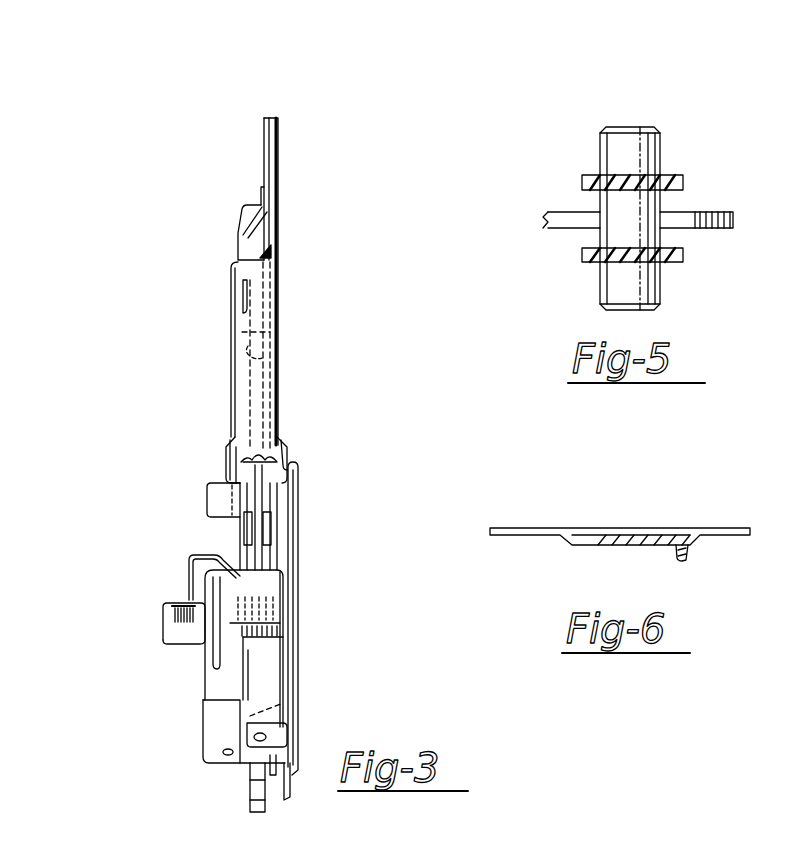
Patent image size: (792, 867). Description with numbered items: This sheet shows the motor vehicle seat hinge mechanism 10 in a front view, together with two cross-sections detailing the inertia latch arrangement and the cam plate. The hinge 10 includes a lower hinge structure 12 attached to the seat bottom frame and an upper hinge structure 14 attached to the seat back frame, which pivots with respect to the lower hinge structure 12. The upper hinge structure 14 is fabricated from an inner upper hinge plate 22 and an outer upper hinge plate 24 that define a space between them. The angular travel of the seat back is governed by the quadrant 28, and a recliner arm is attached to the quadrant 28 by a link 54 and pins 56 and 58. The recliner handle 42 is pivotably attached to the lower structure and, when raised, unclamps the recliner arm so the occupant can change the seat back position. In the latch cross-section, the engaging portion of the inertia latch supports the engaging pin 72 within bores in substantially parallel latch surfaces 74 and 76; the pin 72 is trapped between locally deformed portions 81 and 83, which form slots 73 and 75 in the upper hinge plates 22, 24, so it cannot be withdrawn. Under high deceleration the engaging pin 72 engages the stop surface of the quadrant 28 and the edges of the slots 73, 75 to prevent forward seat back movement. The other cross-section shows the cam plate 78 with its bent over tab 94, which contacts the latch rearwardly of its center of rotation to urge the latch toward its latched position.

In FIG. 3, the seat hinge mechanism 10 is at (298, 438).
In FIG. 3, the lower hinge structure 12 is at (298, 714).
In FIG. 3, the upper hinge structure 14 is at (278, 232).
In FIG. 3, the inner upper hinge plate 22 is at (278, 158).
In FIG. 3, the outer upper hinge plate 24 is at (262, 190).
In FIG. 5, the quadrant 28 is at (710, 212).
In FIG. 3, the recliner handle 42 is at (173, 603).
In FIG. 3, the link 54 is at (256, 500).
In FIG. 3, the pin 56 is at (287, 458).
In FIG. 3, the pin 58 is at (268, 530).
In FIG. 5, the engaging pin 72 is at (642, 127).
In FIG. 3, the slot 73 is at (232, 445).
In FIG. 5, the latch surface 74 is at (678, 176).
In FIG. 3, the slot 75 is at (283, 440).
In FIG. 5, the latch surface 76 is at (683, 256).
In FIG. 6, the cam plate 78 is at (498, 530).
In FIG. 3, the locally deformed portion 81 is at (227, 459).
In FIG. 3, the locally deformed portion 83 is at (292, 444).
In FIG. 6, the bent over tab 94 is at (688, 553).